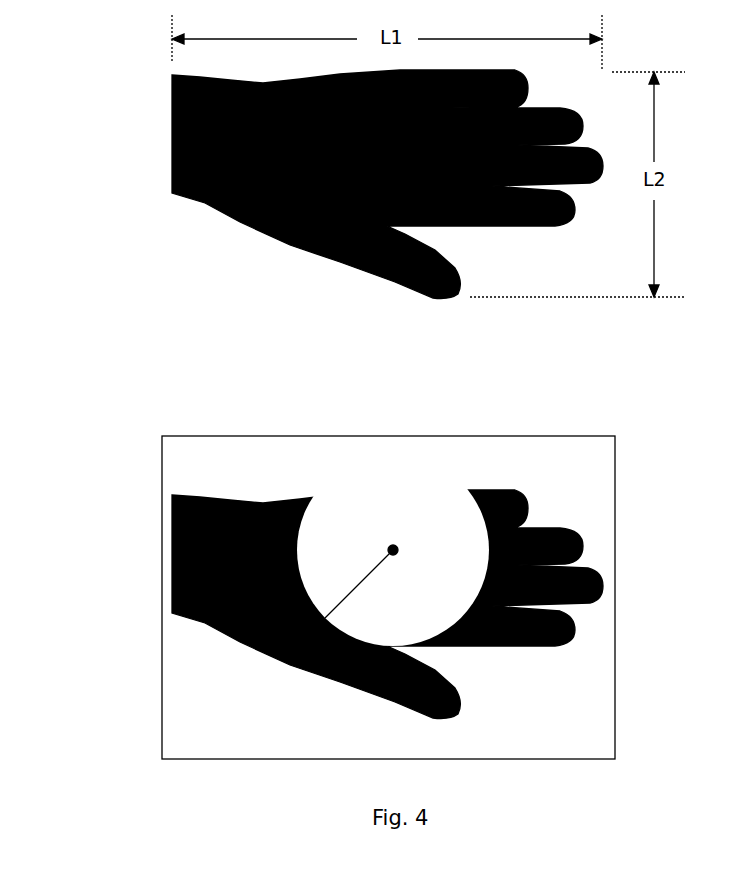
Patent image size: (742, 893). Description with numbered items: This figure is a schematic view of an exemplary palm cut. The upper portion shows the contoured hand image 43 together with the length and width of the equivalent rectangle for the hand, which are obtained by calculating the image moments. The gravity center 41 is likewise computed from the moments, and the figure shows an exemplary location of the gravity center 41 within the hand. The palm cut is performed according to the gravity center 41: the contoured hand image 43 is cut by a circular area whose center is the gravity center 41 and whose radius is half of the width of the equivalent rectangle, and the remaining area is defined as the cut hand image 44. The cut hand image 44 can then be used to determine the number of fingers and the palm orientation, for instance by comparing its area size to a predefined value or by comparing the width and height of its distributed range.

The gravity center 41 is at (393, 550).
The contoured hand image 43 is at (172, 148).
The cut hand image 44 is at (173, 557).